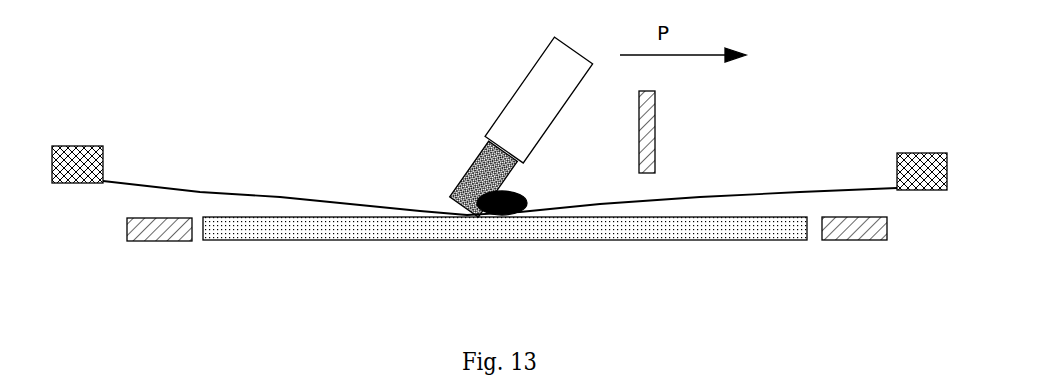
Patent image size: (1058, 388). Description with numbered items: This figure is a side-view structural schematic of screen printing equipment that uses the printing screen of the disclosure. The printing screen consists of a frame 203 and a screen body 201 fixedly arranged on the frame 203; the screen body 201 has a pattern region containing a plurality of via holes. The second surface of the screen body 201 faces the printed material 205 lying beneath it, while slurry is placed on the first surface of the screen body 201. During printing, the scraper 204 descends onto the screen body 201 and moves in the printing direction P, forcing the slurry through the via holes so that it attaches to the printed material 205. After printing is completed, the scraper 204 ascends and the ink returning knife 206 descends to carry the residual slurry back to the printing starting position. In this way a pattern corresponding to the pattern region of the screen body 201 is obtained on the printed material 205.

The screen body 201 is at (207, 194).
The frame 203 is at (80, 146).
The scraper 204 is at (527, 93).
The printed material 205 is at (630, 243).
The ink returning knife 206 is at (655, 128).